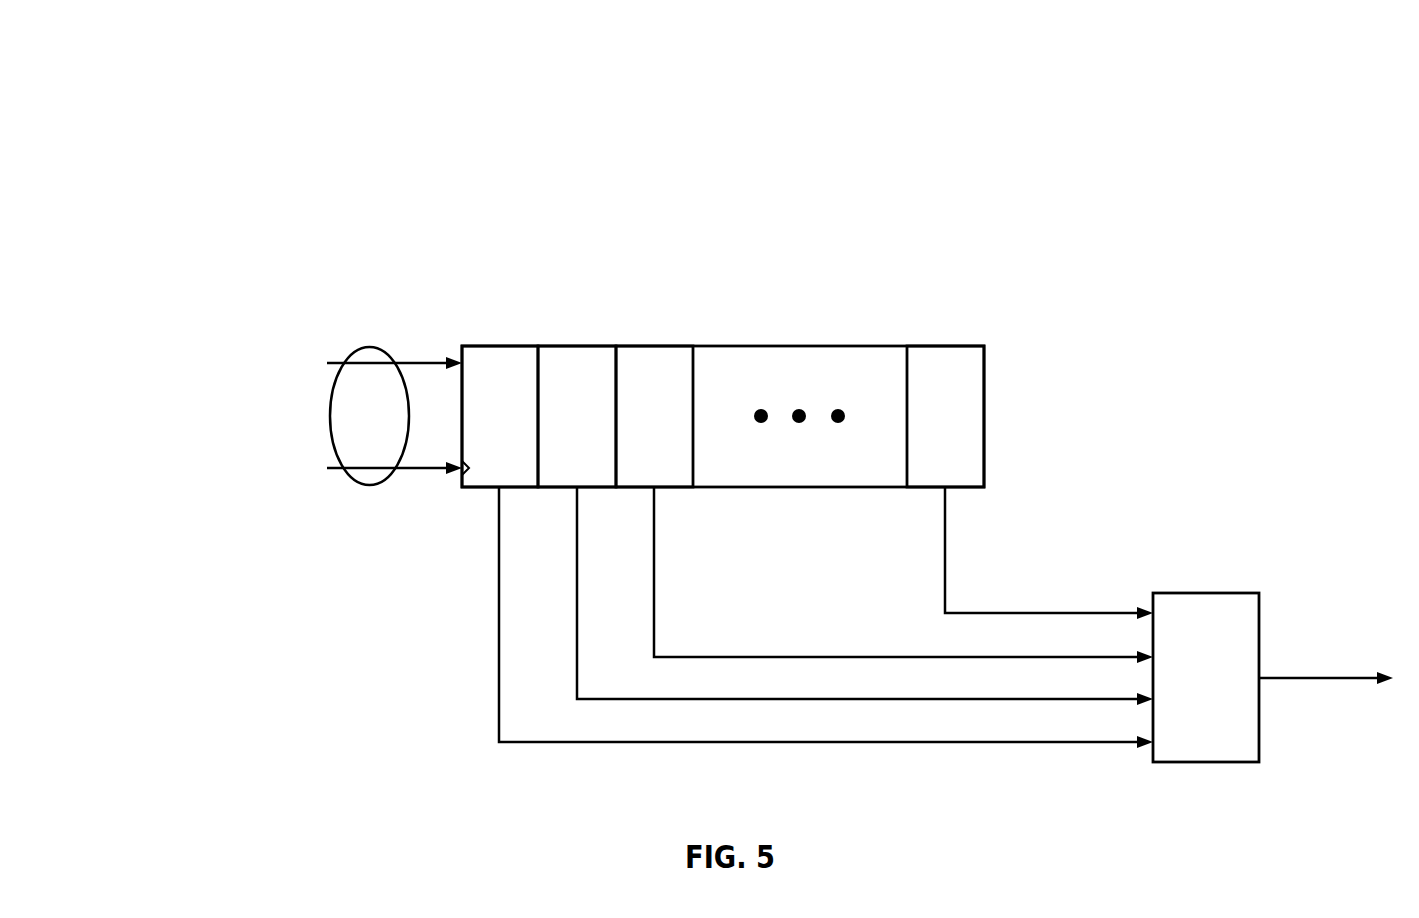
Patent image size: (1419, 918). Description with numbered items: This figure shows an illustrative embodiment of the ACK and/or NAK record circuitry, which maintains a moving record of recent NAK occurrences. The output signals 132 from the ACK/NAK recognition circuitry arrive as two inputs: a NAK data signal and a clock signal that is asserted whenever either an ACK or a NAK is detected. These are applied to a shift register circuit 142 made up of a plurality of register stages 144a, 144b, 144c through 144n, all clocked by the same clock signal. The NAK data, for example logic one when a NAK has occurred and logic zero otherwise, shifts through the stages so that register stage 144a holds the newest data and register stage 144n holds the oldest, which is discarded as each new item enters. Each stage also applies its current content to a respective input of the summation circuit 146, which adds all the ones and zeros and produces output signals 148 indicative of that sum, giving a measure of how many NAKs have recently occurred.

The output signals 132 is at (368, 347).
The shift register circuit 142 is at (762, 358).
The register stage 144a is at (493, 346).
The register stage 144b is at (577, 346).
The register stage 144c is at (654, 346).
The register stage 144n is at (945, 346).
The summation circuit 146 is at (1207, 593).
The output signals 148 is at (1326, 678).